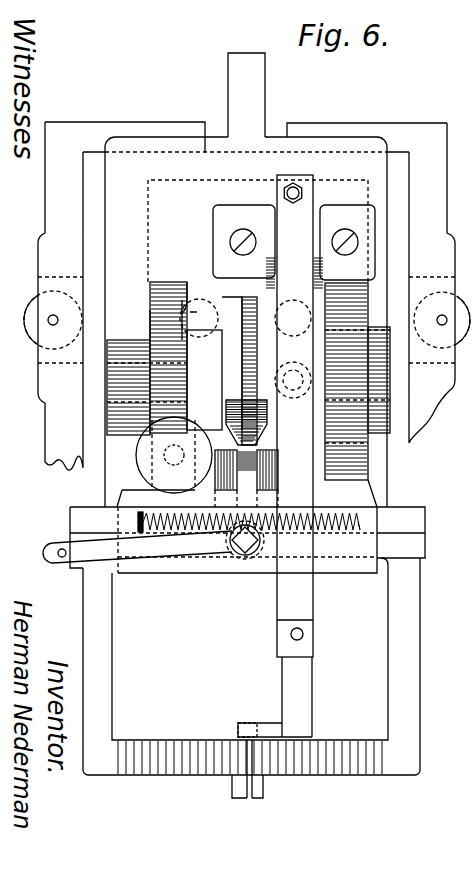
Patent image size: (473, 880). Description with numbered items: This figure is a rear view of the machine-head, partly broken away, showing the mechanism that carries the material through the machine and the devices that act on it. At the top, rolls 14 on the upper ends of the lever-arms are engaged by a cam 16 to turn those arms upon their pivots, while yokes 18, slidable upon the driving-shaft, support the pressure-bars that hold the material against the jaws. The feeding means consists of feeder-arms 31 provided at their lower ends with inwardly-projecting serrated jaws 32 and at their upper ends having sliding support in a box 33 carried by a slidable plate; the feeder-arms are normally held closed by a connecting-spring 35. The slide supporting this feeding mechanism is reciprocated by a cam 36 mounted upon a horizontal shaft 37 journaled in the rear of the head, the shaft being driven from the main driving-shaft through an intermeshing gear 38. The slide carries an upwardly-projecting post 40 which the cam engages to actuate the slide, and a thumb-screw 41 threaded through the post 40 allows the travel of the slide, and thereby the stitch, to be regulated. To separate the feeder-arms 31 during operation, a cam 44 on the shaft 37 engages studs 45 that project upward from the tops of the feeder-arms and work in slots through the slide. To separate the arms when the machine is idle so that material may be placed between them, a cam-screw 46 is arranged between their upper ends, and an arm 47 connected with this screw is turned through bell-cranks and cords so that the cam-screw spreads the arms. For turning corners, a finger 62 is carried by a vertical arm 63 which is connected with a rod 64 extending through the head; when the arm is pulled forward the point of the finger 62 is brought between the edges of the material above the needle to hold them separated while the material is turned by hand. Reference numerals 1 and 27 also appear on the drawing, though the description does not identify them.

The roller 1 is at (30, 318).
The rolls 14 is at (152, 322).
The cam 16 is at (167, 297).
The yokes 18 is at (92, 125).
The handle column 27 is at (228, 85).
The feeder-arms 31 is at (92, 607).
The serrated jaws 32 is at (230, 790).
The box 33 is at (360, 570).
The connecting-spring 35 is at (183, 512).
The cam 36 is at (230, 327).
The horizontal shaft 37 is at (107, 388).
The gear 38 is at (357, 448).
The post 40 is at (214, 363).
The thumb-screw 41 is at (145, 467).
The cam 44 is at (242, 294).
The studs 45 is at (207, 470).
The cam-screw 46 is at (248, 554).
The arm 47 is at (90, 550).
The finger 62 is at (242, 722).
The vertical arm 63 is at (294, 456).
The rod 64 is at (300, 193).